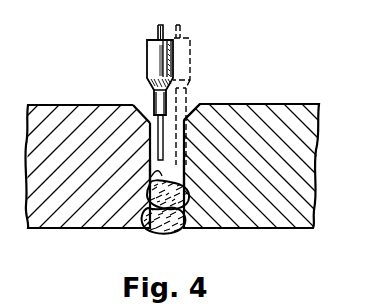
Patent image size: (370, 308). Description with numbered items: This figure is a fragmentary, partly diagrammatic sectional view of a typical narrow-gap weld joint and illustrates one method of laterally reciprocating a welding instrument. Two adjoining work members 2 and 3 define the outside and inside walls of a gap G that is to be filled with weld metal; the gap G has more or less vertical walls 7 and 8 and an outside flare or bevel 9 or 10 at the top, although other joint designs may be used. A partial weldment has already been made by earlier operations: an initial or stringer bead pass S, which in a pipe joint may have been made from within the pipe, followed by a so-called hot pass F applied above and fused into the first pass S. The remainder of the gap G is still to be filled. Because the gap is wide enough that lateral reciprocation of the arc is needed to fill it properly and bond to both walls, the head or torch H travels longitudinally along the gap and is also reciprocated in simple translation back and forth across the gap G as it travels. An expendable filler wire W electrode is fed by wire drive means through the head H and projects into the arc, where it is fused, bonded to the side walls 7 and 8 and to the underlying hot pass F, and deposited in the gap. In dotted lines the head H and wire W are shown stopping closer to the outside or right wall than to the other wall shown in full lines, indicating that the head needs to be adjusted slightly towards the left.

The work member 2 is at (77, 219).
The work member 3 is at (267, 222).
The vertical wall 7 is at (149, 176).
The vertical wall 8 is at (185, 178).
The outside flare or bevel 9 is at (146, 104).
The outside flare or bevel 10 is at (190, 115).
The hot pass F is at (189, 198).
The stringer bead pass S is at (150, 235).
The gap G is at (185, 163).
The head or torch H is at (147, 58).
The filler wire electrode W is at (157, 30).